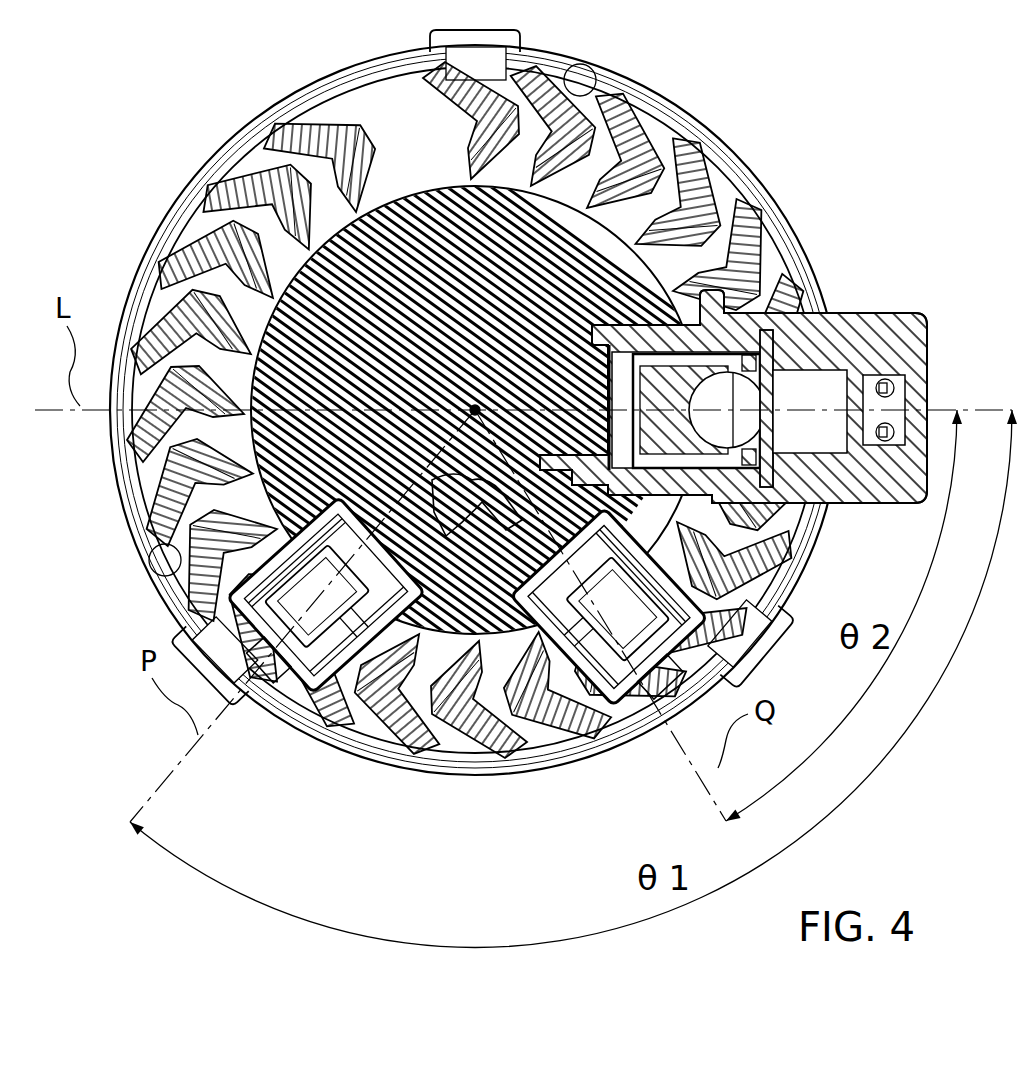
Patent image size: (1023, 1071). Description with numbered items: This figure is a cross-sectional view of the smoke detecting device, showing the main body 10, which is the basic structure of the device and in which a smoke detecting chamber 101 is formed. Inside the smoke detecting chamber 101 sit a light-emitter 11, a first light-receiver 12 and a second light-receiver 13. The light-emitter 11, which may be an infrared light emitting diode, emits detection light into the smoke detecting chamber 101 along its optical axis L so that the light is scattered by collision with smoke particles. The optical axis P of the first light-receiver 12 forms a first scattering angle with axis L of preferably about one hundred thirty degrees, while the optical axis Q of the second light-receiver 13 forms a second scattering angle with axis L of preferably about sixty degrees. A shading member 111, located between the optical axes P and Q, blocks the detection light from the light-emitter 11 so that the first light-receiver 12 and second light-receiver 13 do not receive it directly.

The main body 10 is at (213, 133).
The smoke detecting chamber 101 is at (658, 218).
The light-emitter 11 is at (855, 505).
The shading member 111 is at (470, 530).
The first light-receiver 12 is at (306, 650).
The second light-receiver 13 is at (645, 675).